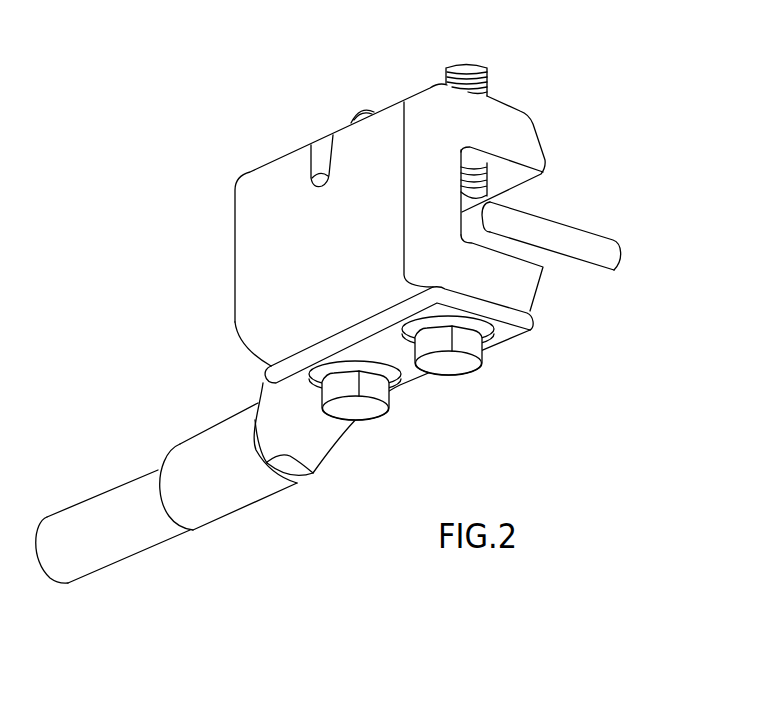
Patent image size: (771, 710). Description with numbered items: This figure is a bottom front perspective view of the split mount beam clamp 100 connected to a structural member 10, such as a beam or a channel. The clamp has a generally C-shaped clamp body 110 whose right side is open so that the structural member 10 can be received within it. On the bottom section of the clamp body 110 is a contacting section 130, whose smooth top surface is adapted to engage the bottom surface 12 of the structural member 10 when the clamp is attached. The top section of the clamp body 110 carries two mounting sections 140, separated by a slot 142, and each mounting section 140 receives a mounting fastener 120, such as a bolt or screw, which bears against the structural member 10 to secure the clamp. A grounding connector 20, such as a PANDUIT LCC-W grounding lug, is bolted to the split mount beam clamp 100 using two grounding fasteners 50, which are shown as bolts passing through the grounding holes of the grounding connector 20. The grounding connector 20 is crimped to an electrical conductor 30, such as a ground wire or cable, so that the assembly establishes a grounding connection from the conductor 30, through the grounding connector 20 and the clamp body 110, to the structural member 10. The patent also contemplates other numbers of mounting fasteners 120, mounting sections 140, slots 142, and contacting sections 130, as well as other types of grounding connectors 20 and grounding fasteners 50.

The split mount beam clamp 100 is at (554, 95).
The clamp body 110 is at (235, 250).
The mounting fastener 120 is at (364, 112).
The contacting section 130 is at (513, 283).
The mounting section 140 is at (519, 135).
The slot 142 is at (318, 155).
The structural member 10 is at (577, 227).
The bottom surface 12 is at (577, 272).
The grounding connector 20 is at (210, 427).
The electrical conductor 30 is at (97, 490).
The grounding fastener 50 is at (364, 411).